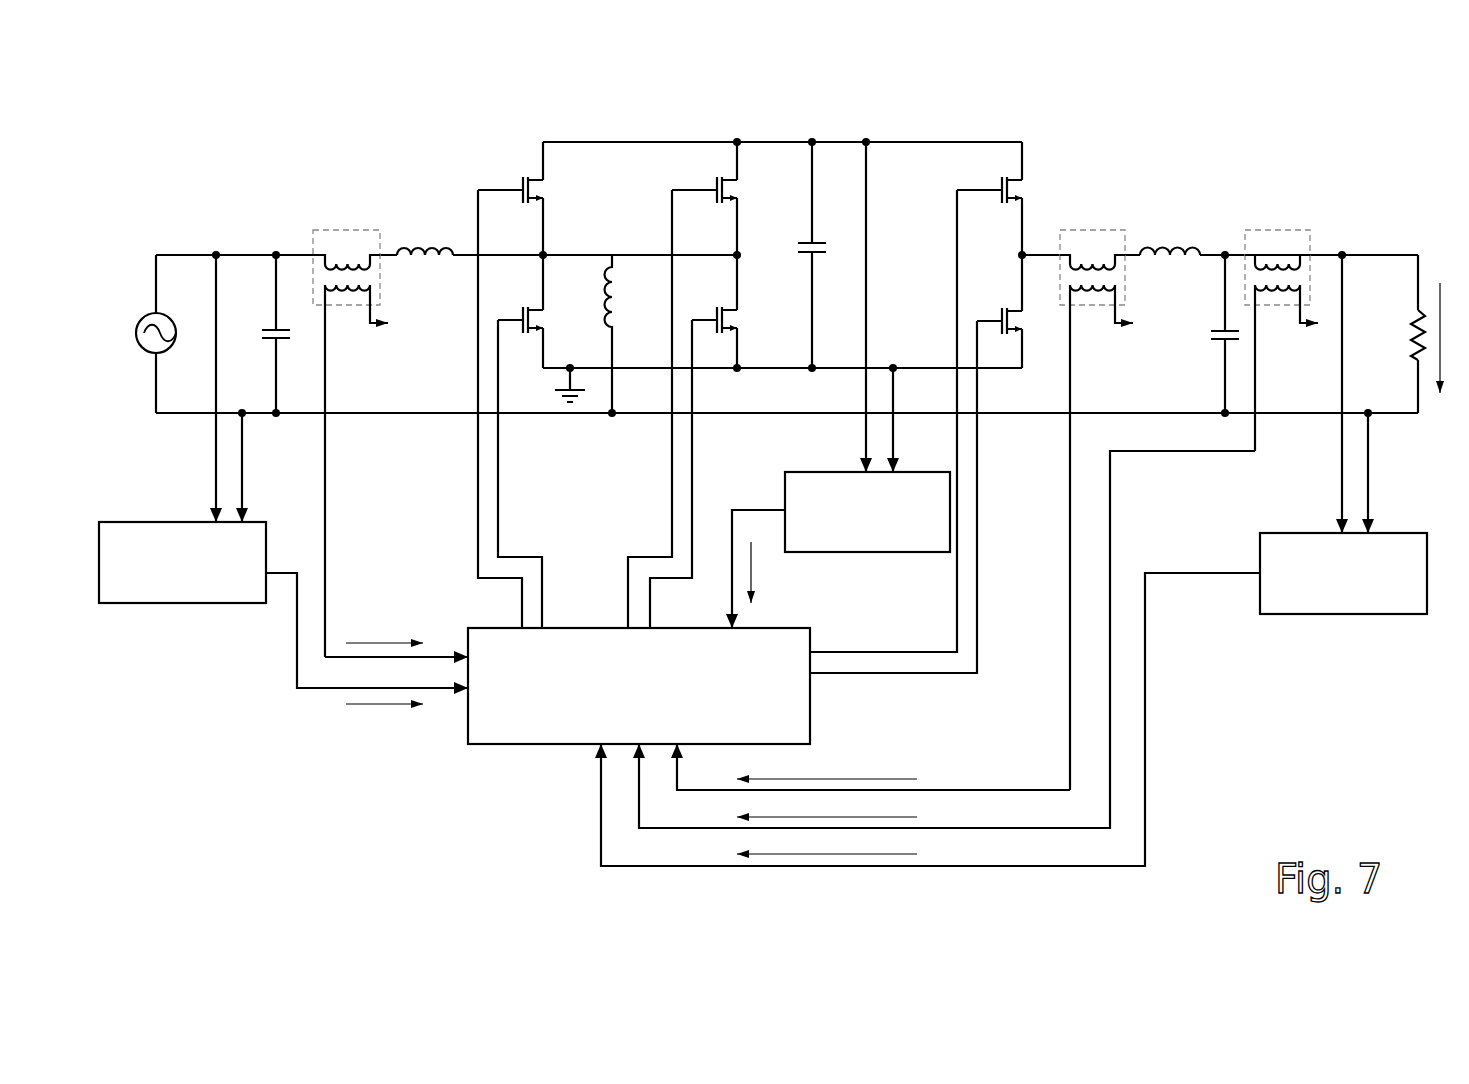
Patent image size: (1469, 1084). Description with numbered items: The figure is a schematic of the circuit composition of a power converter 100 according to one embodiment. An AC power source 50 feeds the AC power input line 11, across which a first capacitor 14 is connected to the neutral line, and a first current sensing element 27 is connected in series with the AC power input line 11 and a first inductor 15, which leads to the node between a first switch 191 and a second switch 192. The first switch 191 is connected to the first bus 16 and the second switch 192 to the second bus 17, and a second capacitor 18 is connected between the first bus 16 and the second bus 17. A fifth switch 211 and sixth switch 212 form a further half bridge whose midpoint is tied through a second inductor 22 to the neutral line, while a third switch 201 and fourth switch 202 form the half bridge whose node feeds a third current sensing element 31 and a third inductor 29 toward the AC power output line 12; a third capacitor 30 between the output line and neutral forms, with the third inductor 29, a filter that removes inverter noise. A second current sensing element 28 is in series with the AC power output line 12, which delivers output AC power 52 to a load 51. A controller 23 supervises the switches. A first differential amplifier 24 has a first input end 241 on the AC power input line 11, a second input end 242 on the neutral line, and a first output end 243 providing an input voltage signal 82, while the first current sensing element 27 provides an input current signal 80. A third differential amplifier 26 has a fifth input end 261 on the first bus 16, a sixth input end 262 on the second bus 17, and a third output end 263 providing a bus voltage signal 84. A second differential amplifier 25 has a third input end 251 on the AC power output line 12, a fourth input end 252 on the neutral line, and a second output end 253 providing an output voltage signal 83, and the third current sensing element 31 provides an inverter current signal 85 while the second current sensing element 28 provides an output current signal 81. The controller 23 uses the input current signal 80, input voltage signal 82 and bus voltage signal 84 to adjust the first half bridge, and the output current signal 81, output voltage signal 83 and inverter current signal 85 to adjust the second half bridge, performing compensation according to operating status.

The power converter 100 is at (1418, 127).
The AC power source 50 is at (150, 300).
The AC power input line 11 is at (198, 250).
The first capacitor 14 is at (270, 330).
The first current sensing element 27 is at (335, 230).
The first inductor 15 is at (433, 260).
The first bus 16 is at (1015, 142).
The first switch 191 is at (533, 175).
The second switch 192 is at (525, 300).
The fifth switch 211 is at (725, 172).
The sixth switch 212 is at (714, 300).
The third switch 201 is at (985, 180).
The fourth switch 202 is at (985, 310).
The second inductor 22 is at (605, 285).
The second capacitor 18 is at (820, 235).
The second bus 17 is at (650, 392).
The third current sensing element 31 is at (1085, 230).
The third inductor 29 is at (1175, 250).
The third capacitor 30 is at (1220, 340).
The second current sensing element 28 is at (1267, 230).
The AC power output line 12 is at (1345, 250).
The load 51 is at (1405, 335).
The output AC power 52 is at (1444, 300).
The controller 23 is at (490, 745).
The first differential amplifier 24 is at (218, 603).
The first input end 241 is at (214, 463).
The second input end 242 is at (244, 462).
The first output end 243 is at (305, 690).
The input current signal 80 is at (368, 640).
The input voltage signal 82 is at (390, 705).
The third differential amplifier 26 is at (893, 553).
The fifth input end 261 is at (864, 432).
The sixth input end 262 is at (895, 440).
The third output end 263 is at (730, 552).
The bus voltage signal 84 is at (762, 565).
The second differential amplifier 25 is at (1362, 615).
The third input end 251 is at (1340, 478).
The fourth input end 252 is at (1370, 478).
The second output end 253 is at (1215, 575).
The inverter current signal 85 is at (860, 777).
The output current signal 81 is at (845, 818).
The output voltage signal 83 is at (795, 855).